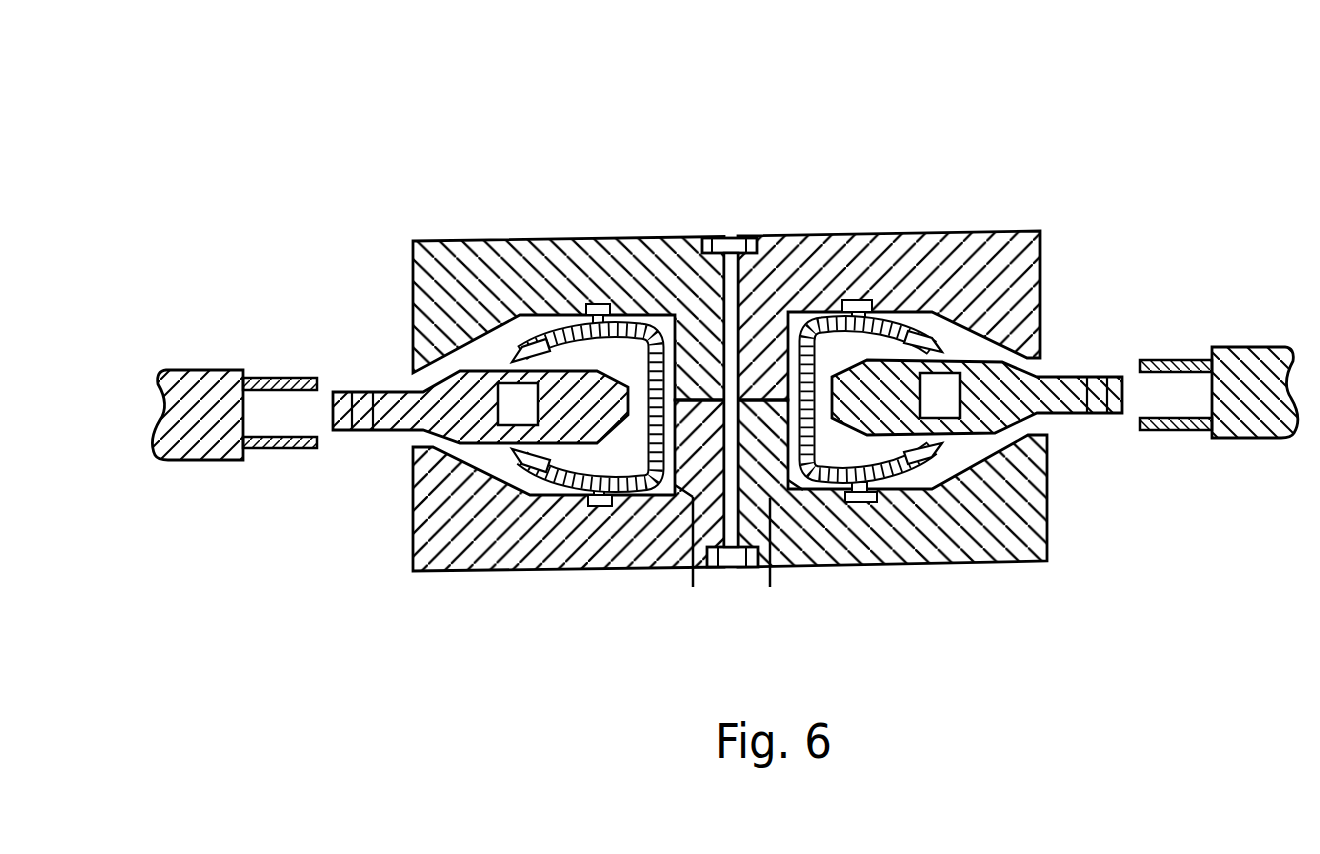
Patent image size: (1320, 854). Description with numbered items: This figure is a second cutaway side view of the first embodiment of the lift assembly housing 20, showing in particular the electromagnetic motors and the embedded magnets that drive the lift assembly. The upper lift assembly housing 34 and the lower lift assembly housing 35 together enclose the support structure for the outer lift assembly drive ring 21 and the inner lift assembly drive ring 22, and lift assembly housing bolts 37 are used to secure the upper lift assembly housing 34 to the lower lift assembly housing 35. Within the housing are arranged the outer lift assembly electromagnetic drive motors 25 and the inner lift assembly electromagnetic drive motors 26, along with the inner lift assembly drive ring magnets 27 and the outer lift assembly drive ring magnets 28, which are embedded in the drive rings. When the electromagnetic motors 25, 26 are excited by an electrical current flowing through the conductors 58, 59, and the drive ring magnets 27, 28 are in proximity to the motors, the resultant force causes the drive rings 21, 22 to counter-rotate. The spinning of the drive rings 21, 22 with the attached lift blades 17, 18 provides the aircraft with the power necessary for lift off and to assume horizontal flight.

The lift assembly housing 20 is at (724, 348).
The upper lift assembly housing 34 is at (535, 255).
The lower lift assembly housing 35 is at (994, 538).
The lift assembly housing bolts 37 is at (720, 236).
The outer lift assembly drive ring 21 is at (363, 392).
The inner lift assembly drive ring 22 is at (1094, 377).
The inner lift assembly drive ring magnets 27 is at (519, 407).
The outer lift assembly drive ring magnets 28 is at (945, 390).
The outer lift assembly electromagnetic drive motors 25 is at (573, 490).
The inner lift assembly electromagnetic drive motors 26 is at (832, 490).
The lift blade 18 is at (196, 369).
The lift blade 17 is at (1265, 347).
The conductor 58 is at (693, 580).
The conductor 59 is at (768, 578).